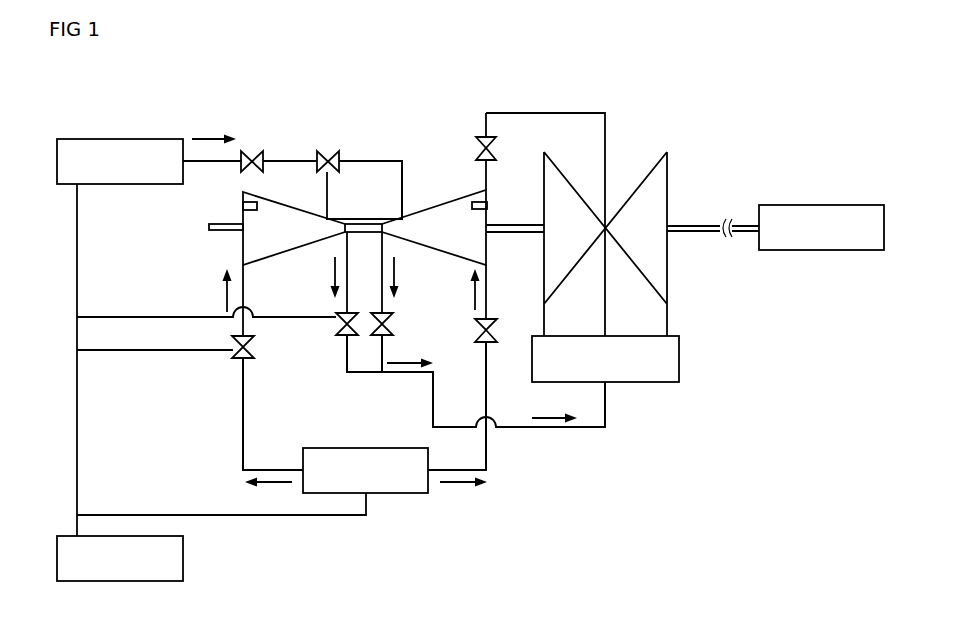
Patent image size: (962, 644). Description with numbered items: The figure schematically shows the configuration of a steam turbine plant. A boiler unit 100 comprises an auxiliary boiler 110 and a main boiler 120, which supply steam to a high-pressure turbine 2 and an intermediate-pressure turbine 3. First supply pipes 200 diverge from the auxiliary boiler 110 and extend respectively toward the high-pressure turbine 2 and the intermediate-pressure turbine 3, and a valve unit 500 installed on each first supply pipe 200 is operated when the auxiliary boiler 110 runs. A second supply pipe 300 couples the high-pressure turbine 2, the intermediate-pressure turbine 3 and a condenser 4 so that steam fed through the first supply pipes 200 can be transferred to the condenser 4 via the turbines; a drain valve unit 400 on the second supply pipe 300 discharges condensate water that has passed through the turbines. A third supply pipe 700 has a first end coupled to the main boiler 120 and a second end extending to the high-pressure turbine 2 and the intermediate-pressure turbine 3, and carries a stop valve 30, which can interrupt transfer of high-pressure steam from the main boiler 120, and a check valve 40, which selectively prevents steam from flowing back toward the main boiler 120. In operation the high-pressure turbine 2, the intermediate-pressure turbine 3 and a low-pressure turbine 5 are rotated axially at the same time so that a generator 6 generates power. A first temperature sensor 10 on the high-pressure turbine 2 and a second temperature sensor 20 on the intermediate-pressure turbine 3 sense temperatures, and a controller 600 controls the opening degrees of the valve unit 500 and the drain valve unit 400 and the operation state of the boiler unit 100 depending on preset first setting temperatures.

The boiler unit 100 is at (518, 545).
The auxiliary boiler 110 is at (398, 495).
The main boiler 120 is at (118, 139).
The high-pressure turbine 2 is at (298, 248).
The intermediate-pressure turbine 3 is at (432, 207).
The low-pressure turbine 5 is at (645, 176).
The condenser 4 is at (643, 382).
The generator 6 is at (822, 205).
The first temperature sensor 10 is at (243, 206).
The second temperature sensor 20 is at (488, 204).
The stop valve 30 is at (250, 152).
The check valve 40 is at (327, 151).
The first supply pipes 200 is at (243, 413).
The second supply pipe 300 is at (362, 373).
The drain valve unit 400 is at (393, 323).
The valve unit 500 is at (254, 347).
The controller 600 is at (183, 557).
The third supply pipe 700 is at (368, 161).